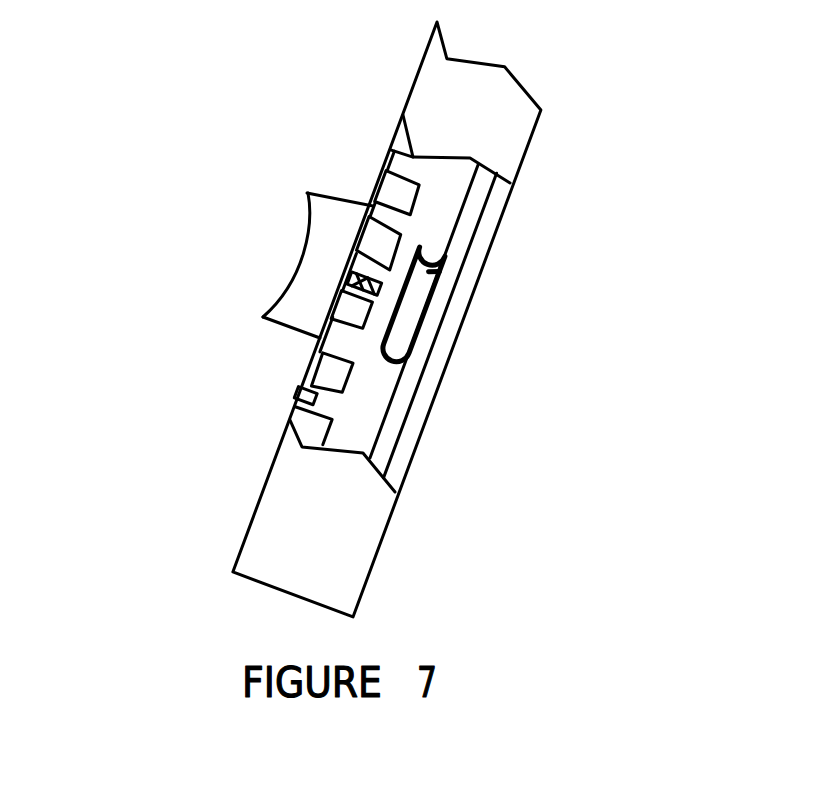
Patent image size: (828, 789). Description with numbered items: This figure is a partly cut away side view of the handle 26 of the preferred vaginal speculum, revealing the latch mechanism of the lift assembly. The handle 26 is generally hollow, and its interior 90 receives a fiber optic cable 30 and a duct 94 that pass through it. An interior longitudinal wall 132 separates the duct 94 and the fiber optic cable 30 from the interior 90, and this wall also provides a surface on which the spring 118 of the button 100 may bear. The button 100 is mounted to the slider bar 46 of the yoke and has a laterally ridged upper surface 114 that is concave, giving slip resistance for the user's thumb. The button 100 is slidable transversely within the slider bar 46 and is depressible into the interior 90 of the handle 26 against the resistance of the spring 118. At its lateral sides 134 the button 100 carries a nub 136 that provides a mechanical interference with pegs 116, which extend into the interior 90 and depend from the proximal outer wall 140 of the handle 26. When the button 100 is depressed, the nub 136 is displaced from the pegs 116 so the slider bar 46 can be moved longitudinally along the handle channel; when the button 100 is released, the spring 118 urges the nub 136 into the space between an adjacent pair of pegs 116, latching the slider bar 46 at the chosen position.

The handle 26 is at (395, 325).
The fiber optic cable 30 is at (416, 303).
The slider bar 46 is at (247, 416).
The interior 90 is at (441, 345).
The duct 94 is at (478, 325).
The button 100 is at (190, 344).
The laterally ridged upper surface 114 is at (253, 263).
The pegs 116 is at (287, 262).
The spring 118 is at (500, 282).
The interior longitudinal wall 132 is at (560, 178).
The lateral sides 134 is at (492, 312).
The nub 136 is at (287, 244).
The proximal outer wall 140 is at (202, 496).